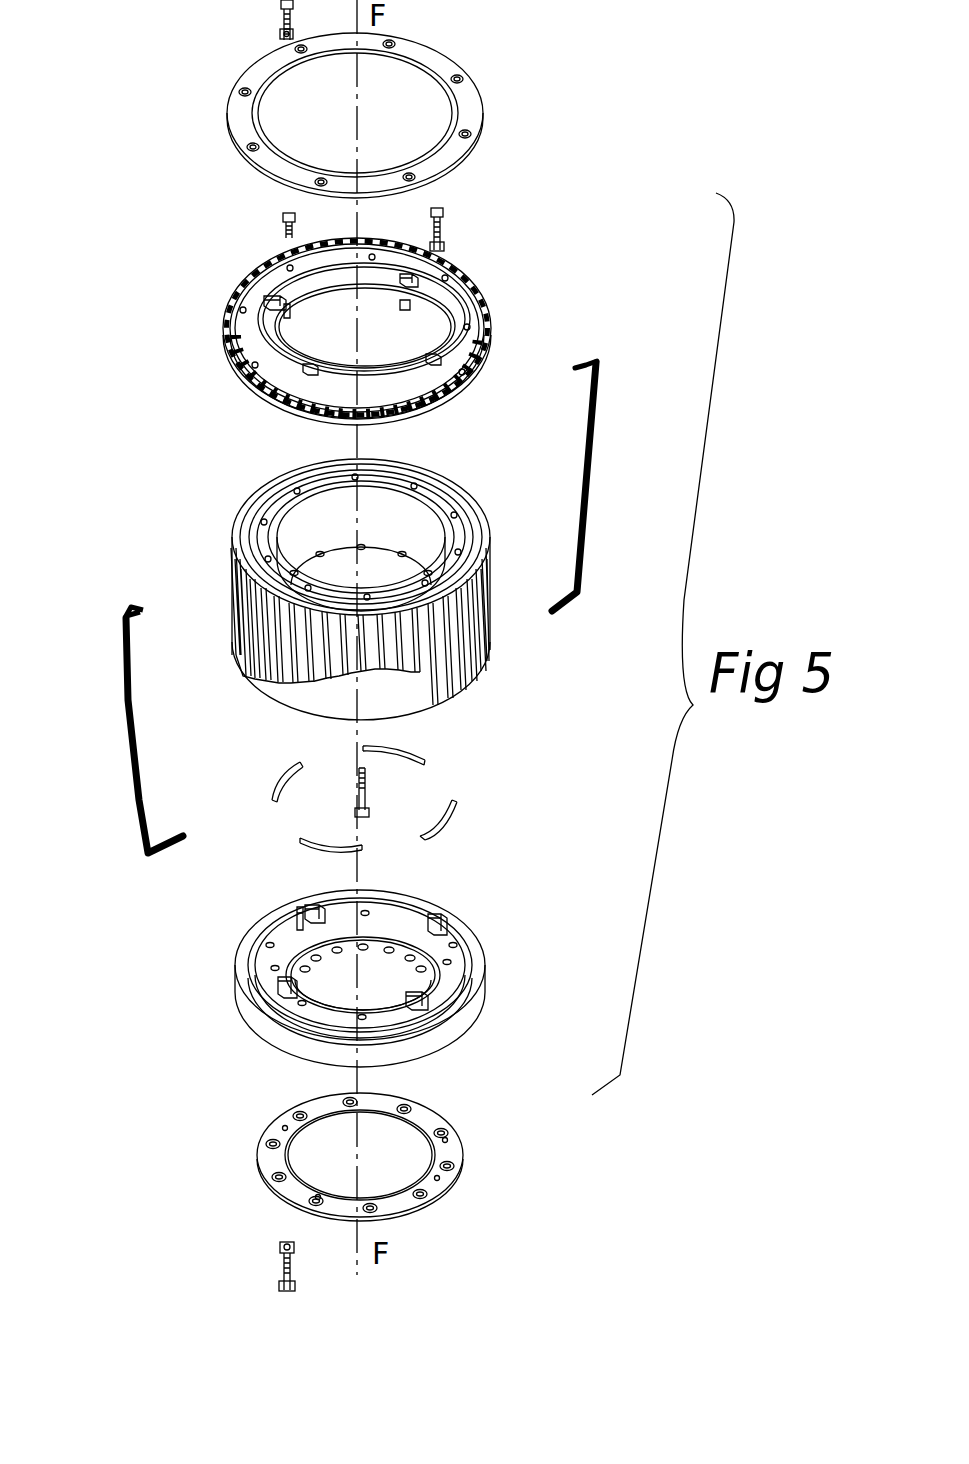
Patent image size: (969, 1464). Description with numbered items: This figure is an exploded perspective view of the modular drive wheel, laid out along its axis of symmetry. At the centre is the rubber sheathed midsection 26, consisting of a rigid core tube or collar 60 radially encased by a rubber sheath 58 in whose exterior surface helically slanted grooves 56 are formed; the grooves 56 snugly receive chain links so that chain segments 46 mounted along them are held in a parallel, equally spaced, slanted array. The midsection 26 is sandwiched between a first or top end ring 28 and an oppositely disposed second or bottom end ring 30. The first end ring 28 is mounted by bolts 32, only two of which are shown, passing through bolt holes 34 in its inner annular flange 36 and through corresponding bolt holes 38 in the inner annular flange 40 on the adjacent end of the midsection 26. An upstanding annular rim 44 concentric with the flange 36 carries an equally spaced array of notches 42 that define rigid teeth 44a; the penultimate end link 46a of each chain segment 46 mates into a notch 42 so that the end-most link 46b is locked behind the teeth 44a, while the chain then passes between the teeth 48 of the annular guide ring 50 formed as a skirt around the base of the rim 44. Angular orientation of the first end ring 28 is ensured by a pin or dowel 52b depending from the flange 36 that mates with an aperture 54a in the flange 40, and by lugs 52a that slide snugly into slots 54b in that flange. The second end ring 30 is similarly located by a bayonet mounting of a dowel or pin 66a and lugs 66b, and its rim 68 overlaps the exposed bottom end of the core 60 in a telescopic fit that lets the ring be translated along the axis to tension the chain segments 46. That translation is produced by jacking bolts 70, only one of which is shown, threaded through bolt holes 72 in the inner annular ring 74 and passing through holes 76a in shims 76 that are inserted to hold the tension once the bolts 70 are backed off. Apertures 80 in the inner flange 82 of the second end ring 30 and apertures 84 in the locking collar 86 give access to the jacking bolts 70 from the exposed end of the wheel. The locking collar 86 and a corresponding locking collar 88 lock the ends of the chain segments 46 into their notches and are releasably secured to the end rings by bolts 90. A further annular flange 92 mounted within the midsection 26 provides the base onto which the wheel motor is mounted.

The rubber sheathed midsection 26 is at (391, 582).
The first end ring 28 is at (365, 308).
The second end ring 30 is at (383, 959).
The bolts 32 is at (283, 215).
The bolt holes 34 is at (318, 282).
The inner annular flange 36 is at (308, 319).
The bolt holes 38 is at (322, 478).
The inner annular flange 40 is at (360, 462).
The notches 42 is at (345, 240).
The upstanding annular rim 44 is at (340, 317).
The upstanding rigid teeth 44a is at (236, 292).
The chain segments 46 is at (362, 584).
The penultimate end link 46a is at (588, 356).
The end-most link 46b is at (577, 372).
The teeth 48 is at (462, 366).
The annular guide ring 50 is at (406, 308).
The lugs 52a is at (282, 318).
The pin or dowel 52b is at (288, 320).
The aperture 54a is at (290, 476).
The slots 54b is at (400, 490).
The grooves 56 is at (244, 688).
The rubber sheath 58 is at (482, 666).
The core tube 60 is at (470, 556).
The dowel or pin 66a is at (294, 905).
The lugs 66b is at (455, 915).
The rim 68 is at (472, 935).
The jacking bolts 70 is at (358, 773).
The threaded bolt holes 72 is at (367, 910).
The inner annular ring 74 is at (420, 910).
The shims 76 is at (390, 792).
The holes 76a is at (360, 750).
The apertures 80 is at (366, 952).
The inner flange 82 is at (305, 965).
The apertures 84 is at (328, 1098).
The locking collar 86 is at (369, 1149).
The locking collar 88 is at (470, 97).
The bolts 90 is at (280, 8).
The annular flange 92 is at (362, 546).